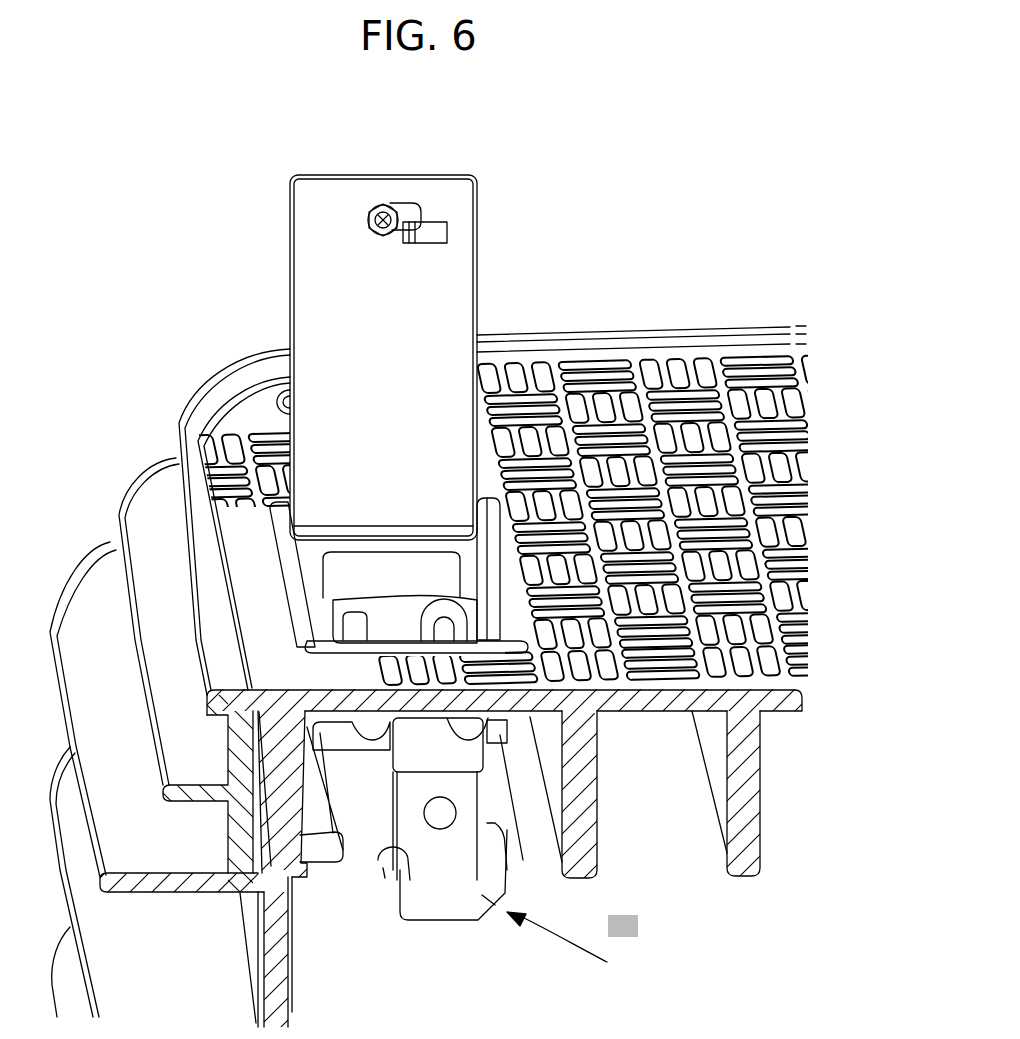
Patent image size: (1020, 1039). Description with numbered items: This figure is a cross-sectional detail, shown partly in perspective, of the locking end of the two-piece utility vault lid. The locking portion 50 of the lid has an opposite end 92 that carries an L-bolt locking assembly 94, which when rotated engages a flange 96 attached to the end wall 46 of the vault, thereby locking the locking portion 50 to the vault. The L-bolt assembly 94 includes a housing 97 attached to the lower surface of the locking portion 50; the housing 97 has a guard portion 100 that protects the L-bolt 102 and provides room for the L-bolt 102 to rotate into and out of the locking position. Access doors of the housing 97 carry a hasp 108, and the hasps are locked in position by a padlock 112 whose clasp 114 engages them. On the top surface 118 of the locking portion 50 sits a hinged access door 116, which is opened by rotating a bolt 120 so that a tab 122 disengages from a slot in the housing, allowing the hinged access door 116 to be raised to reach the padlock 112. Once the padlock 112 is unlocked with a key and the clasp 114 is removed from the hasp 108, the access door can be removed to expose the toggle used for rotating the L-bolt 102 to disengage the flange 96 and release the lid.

The end wall 46 is at (273, 940).
The locking portion 50 is at (612, 664).
The opposite end 92 is at (510, 722).
The L-bolt locking assembly 94 is at (505, 912).
The flange 96 is at (343, 812).
The housing 97 is at (572, 932).
The guard portion 100 is at (452, 857).
The L-bolt 102 is at (380, 862).
The hasp 108 is at (510, 425).
The padlock 112 is at (392, 578).
The clasp 114 is at (357, 635).
The hinged access door 116 is at (445, 270).
The top surface 118 is at (284, 514).
The bolt 120 is at (372, 226).
The tab 122 is at (412, 212).